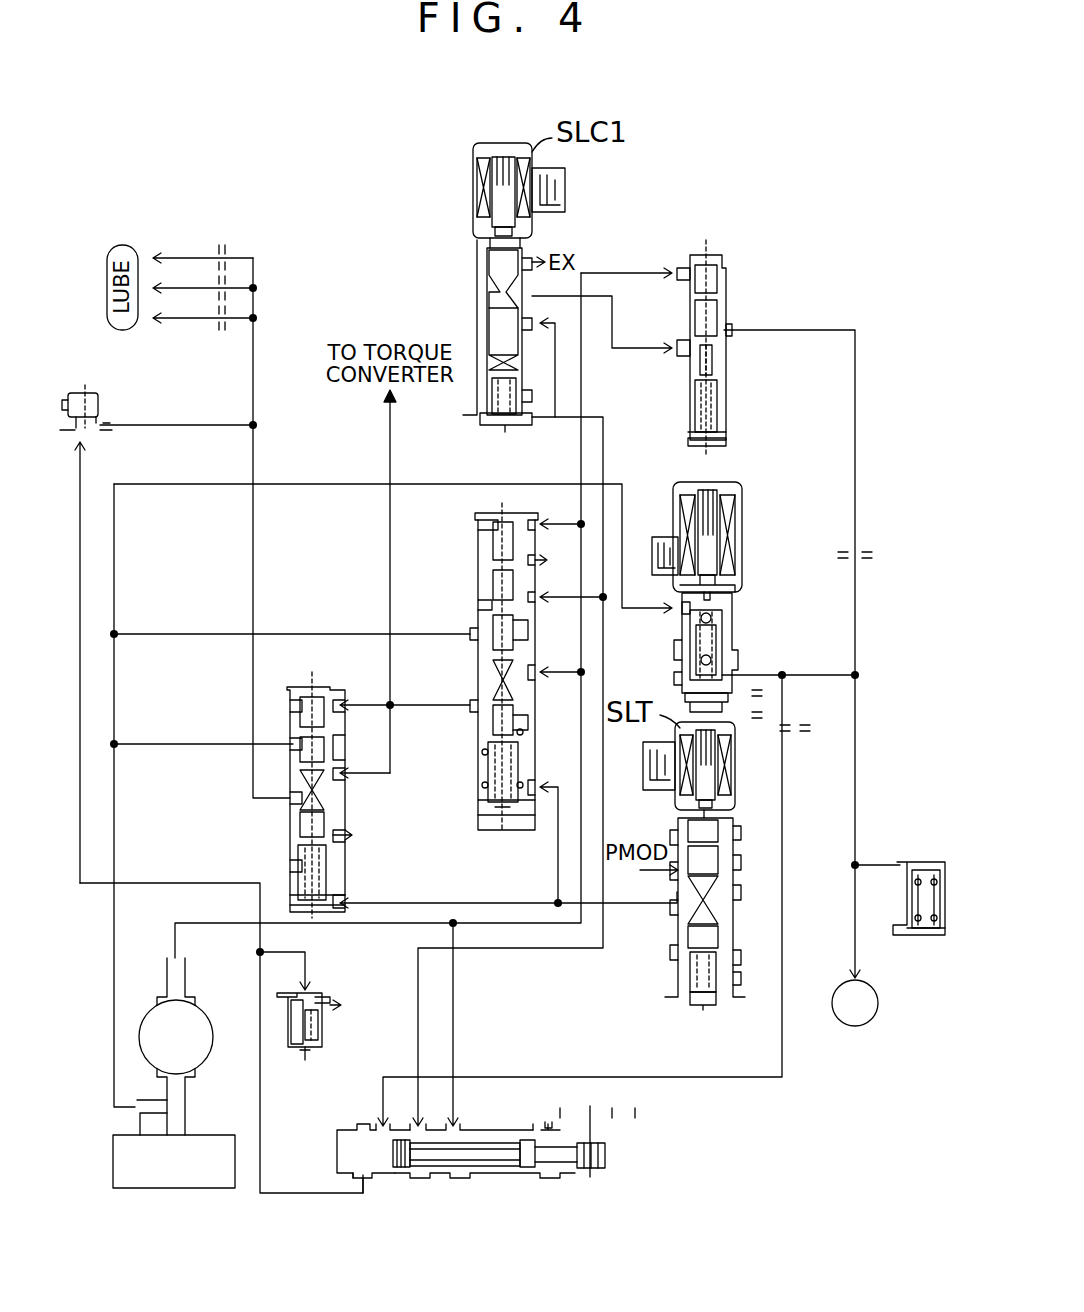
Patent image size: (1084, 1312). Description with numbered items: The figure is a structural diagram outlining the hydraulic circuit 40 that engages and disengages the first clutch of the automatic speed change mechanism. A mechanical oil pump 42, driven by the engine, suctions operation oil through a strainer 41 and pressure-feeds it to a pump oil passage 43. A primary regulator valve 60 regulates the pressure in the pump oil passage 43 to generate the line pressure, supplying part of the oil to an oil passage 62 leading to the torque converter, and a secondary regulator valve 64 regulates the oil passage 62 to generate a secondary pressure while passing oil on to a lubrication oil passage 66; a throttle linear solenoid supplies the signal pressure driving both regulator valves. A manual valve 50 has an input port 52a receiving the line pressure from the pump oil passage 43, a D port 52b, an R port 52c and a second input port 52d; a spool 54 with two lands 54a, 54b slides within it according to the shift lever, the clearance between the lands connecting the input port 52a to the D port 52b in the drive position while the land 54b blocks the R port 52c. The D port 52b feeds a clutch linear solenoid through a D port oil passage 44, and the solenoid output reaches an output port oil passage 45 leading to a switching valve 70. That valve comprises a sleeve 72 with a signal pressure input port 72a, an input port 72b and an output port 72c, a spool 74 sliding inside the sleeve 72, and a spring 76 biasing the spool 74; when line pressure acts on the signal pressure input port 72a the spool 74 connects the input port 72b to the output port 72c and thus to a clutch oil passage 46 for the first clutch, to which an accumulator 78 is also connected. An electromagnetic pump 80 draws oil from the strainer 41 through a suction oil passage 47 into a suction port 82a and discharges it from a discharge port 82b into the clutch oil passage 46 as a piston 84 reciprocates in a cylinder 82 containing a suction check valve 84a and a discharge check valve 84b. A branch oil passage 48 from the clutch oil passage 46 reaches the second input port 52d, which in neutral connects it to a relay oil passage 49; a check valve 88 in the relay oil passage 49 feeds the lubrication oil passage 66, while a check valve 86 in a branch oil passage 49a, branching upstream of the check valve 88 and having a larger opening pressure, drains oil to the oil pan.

The hydraulic circuit 40 is at (290, 181).
The strainer 41 is at (200, 1132).
The mechanical oil pump 42 is at (200, 1012).
The pump oil passage 43 is at (360, 925).
The D port oil passage 44 is at (418, 1036).
The output port oil passage 45 is at (612, 325).
The clutch oil passage 46 is at (858, 722).
The suction oil passage 47 is at (110, 960).
The branch oil passage 48 is at (784, 956).
The relay oil passage 49 is at (262, 1082).
The branch oil passage 49a is at (280, 952).
The manual valve 50 is at (494, 1148).
The input port 52a is at (458, 1122).
The D port 52b is at (385, 1110).
The R port 52c is at (545, 1130).
The second input port 52d is at (358, 1128).
The spool 54 is at (470, 1170).
The land 54a is at (402, 1170).
The land 54b is at (528, 1170).
The primary regulator valve 60 is at (470, 520).
The oil passage 62 is at (400, 550).
The secondary regulator valve 64 is at (320, 683).
The lubrication oil passage 66 is at (253, 585).
The switching valve 70 is at (728, 247).
The sleeve 72 is at (720, 258).
The signal pressure input port 72a is at (688, 268).
The input port 72b is at (685, 358).
The output port 72c is at (726, 338).
The spool 74 is at (695, 290).
The spring 76 is at (715, 385).
The accumulator 78 is at (925, 862).
The electromagnetic pump 80 is at (742, 495).
The cylinder 82 is at (738, 645).
The suction port 82a is at (670, 600).
The discharge port 82b is at (728, 690).
The piston 84 is at (688, 628).
The suction check valve 84a is at (700, 660).
The discharge check valve 84b is at (715, 612).
The check valve 86 is at (322, 994).
The check valve 88 is at (100, 400).